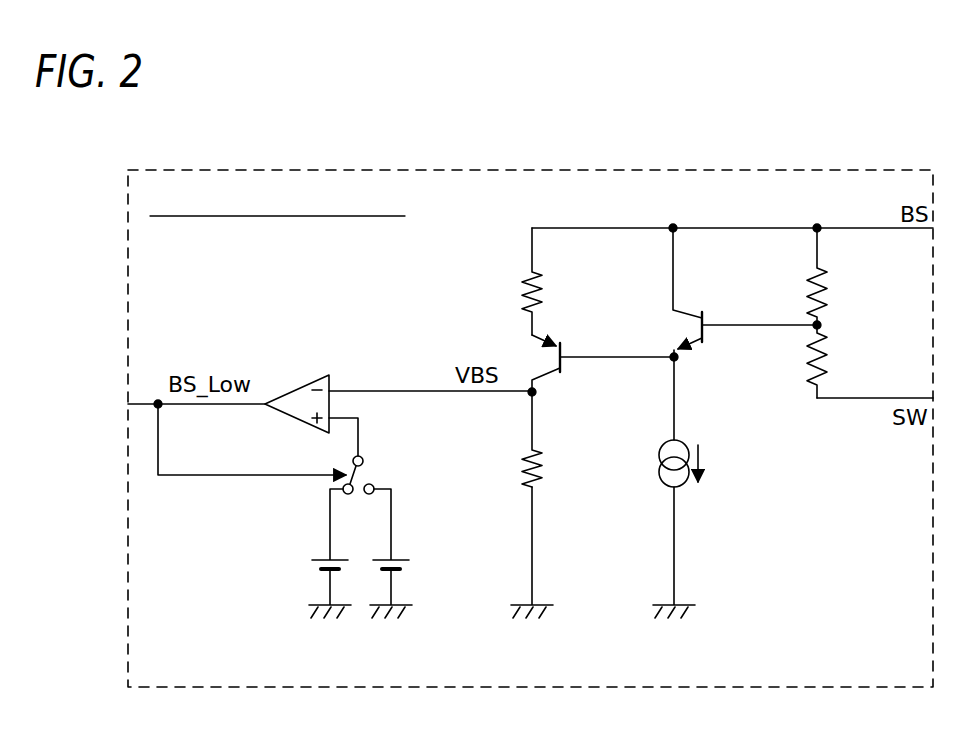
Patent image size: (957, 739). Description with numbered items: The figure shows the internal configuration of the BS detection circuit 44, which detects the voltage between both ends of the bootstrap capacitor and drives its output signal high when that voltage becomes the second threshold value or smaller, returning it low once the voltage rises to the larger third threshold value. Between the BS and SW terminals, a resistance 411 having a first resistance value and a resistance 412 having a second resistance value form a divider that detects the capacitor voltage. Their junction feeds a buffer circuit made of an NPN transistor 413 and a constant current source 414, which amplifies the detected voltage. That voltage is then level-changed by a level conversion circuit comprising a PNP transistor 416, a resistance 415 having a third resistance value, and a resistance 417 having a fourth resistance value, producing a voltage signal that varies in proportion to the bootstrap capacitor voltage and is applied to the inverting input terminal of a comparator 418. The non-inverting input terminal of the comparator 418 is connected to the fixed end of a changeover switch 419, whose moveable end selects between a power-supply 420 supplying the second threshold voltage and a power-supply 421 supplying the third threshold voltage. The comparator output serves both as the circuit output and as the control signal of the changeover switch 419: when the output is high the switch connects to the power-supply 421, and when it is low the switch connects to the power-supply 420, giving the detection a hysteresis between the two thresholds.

The BS detection circuit 44 is at (540, 170).
The resistance 411 is at (813, 272).
The resistance 412 is at (810, 352).
The NPN transistor 413 is at (680, 313).
The constant current source 414 is at (683, 442).
The resistance 415 is at (527, 272).
The PNP transistor 416 is at (540, 333).
The resistance 417 is at (527, 452).
The comparator 418 is at (307, 384).
The changeover switch 419 is at (365, 476).
The power-supply 420 is at (325, 558).
The power-supply 421 is at (405, 558).